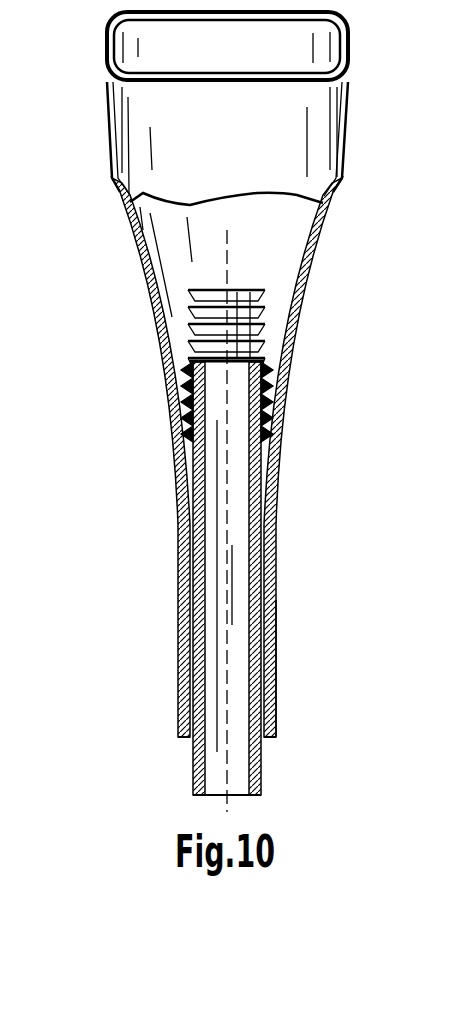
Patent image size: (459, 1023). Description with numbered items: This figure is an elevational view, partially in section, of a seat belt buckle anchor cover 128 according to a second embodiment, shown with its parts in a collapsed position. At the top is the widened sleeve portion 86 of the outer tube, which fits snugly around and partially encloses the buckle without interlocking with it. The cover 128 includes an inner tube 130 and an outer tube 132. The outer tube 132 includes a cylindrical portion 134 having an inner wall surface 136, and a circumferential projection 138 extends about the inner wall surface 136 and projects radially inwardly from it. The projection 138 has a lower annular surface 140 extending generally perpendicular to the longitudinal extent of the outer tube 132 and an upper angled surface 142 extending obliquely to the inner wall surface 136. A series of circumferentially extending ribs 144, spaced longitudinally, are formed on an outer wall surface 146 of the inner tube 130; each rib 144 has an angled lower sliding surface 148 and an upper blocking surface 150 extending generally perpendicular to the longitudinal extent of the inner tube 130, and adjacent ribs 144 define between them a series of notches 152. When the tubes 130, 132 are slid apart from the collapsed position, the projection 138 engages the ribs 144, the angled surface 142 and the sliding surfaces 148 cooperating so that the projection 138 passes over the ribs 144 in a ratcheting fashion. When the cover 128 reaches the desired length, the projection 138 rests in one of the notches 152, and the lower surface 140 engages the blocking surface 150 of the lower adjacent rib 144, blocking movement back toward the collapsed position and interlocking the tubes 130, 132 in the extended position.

The sleeve portion 86 is at (343, 125).
The seat belt buckle anchor cover 128 is at (130, 479).
The inner tube 130 is at (262, 778).
The outer tube 132 is at (277, 718).
The cylindrical portion 134 is at (274, 678).
The inner wall surface 136 is at (190, 680).
The circumferential projection 138 is at (196, 612).
The lower annular surface 140 is at (262, 643).
The upper angled surface 142 is at (271, 583).
The ribs 144 is at (262, 325).
The outer wall surface 146 is at (263, 490).
The angled lower sliding surface 148 is at (262, 402).
The upper blocking surface 150 is at (263, 378).
The notches 152 is at (193, 412).